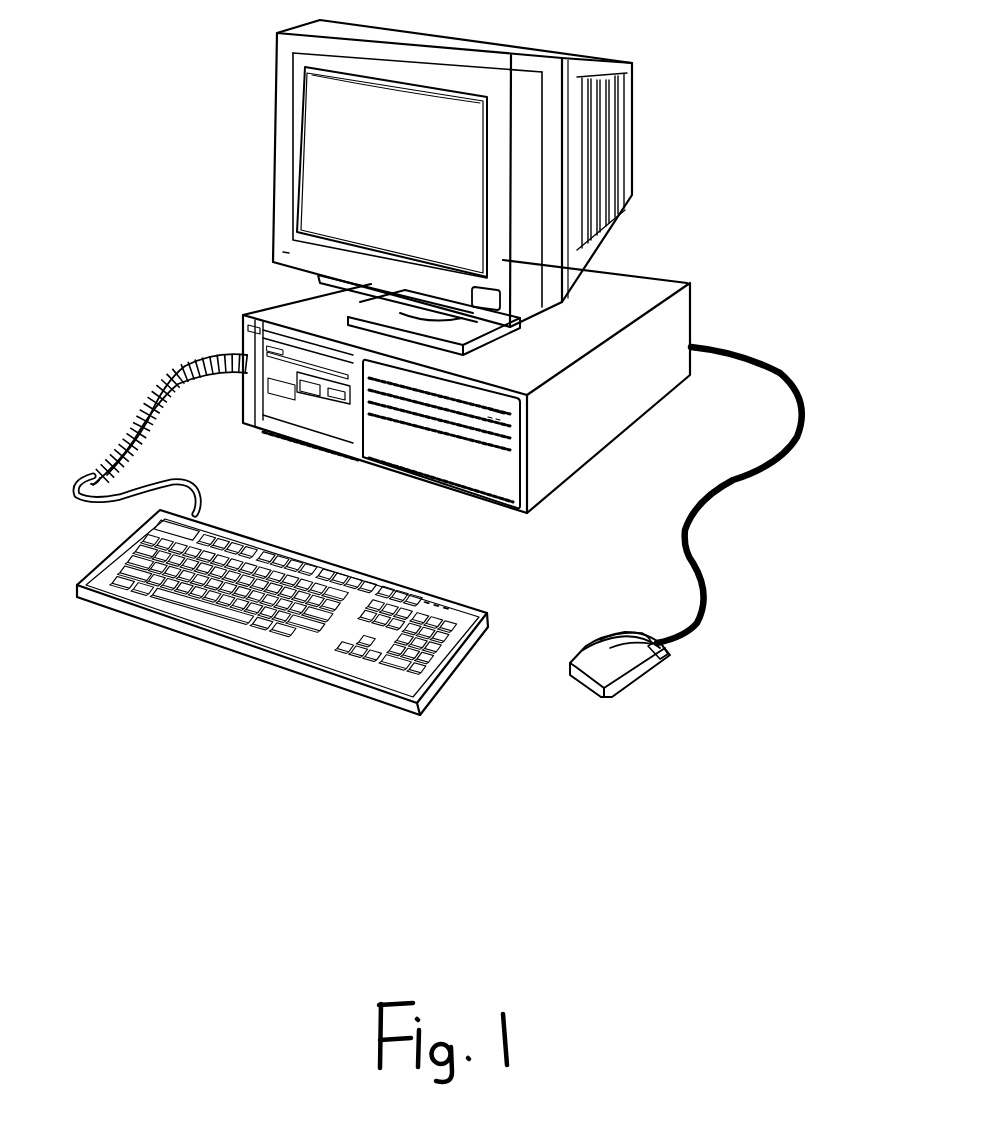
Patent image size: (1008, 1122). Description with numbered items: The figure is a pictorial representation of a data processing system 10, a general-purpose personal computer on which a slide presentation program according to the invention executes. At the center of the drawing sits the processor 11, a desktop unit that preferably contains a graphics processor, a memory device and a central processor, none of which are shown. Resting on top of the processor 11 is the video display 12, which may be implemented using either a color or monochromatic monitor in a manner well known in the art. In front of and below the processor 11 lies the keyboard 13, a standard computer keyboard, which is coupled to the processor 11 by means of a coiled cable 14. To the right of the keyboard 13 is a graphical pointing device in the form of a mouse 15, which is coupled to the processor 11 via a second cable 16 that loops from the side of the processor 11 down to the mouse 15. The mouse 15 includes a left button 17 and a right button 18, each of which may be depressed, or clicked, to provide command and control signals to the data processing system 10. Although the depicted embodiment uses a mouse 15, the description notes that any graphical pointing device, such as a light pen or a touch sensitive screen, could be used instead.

The data processing system 10 is at (777, 107).
The processor 11 is at (243, 330).
The video display 12 is at (273, 100).
The keyboard 13 is at (230, 650).
The cable 14 is at (137, 420).
The mouse 15 is at (613, 658).
The cable 16 is at (743, 483).
The left button 17 is at (627, 632).
The right button 18 is at (652, 650).